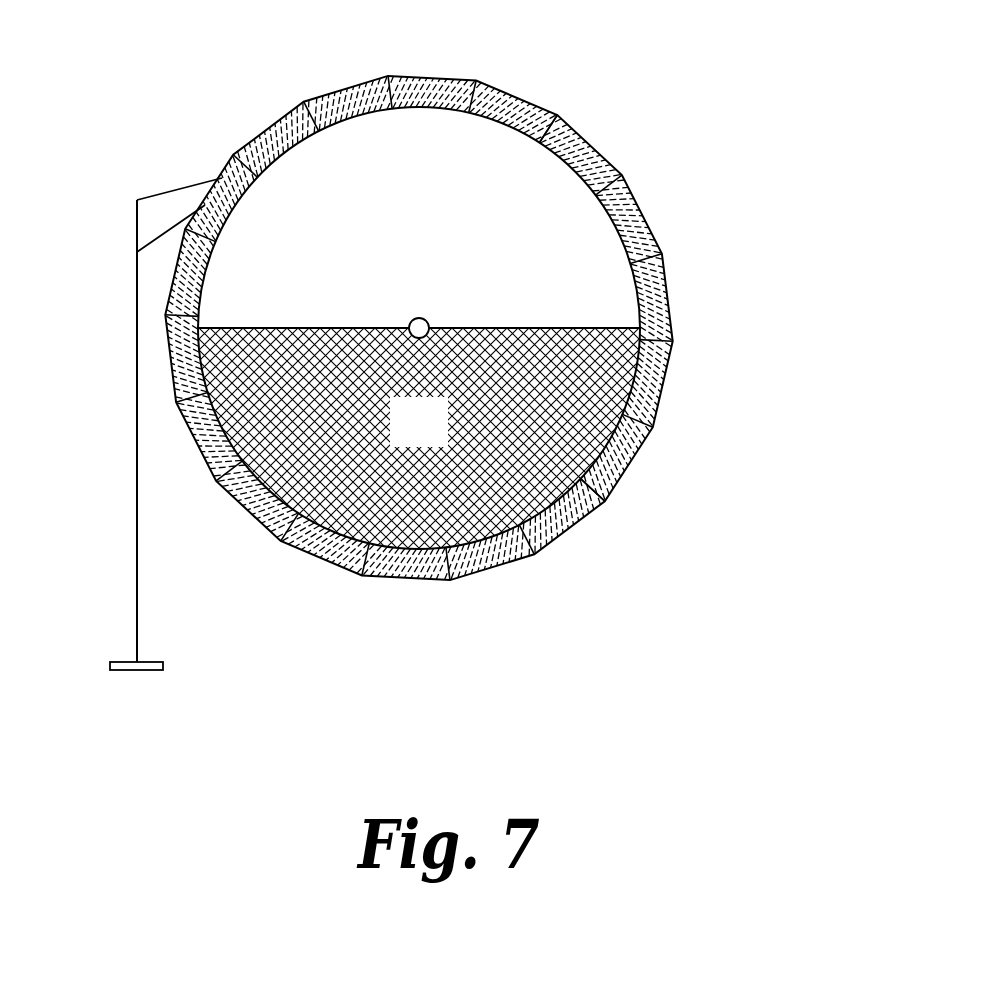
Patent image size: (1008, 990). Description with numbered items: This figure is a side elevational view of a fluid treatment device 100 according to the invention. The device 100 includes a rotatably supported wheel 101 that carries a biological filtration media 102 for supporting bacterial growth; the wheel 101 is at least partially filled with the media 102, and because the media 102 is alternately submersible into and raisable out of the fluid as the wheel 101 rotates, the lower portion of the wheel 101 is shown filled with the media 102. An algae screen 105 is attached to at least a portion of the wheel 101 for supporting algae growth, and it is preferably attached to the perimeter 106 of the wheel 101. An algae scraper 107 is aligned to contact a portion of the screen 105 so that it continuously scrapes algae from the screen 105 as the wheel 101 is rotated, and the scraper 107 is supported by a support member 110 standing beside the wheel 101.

The fluid treatment device 100 is at (470, 354).
The rotatably supported wheel 101 is at (668, 400).
The biological filtration media 102 is at (419, 433).
The algae screen 105 is at (590, 512).
The perimeter 106 is at (548, 108).
The algae scraper 107 is at (168, 172).
The support member 110 is at (150, 643).